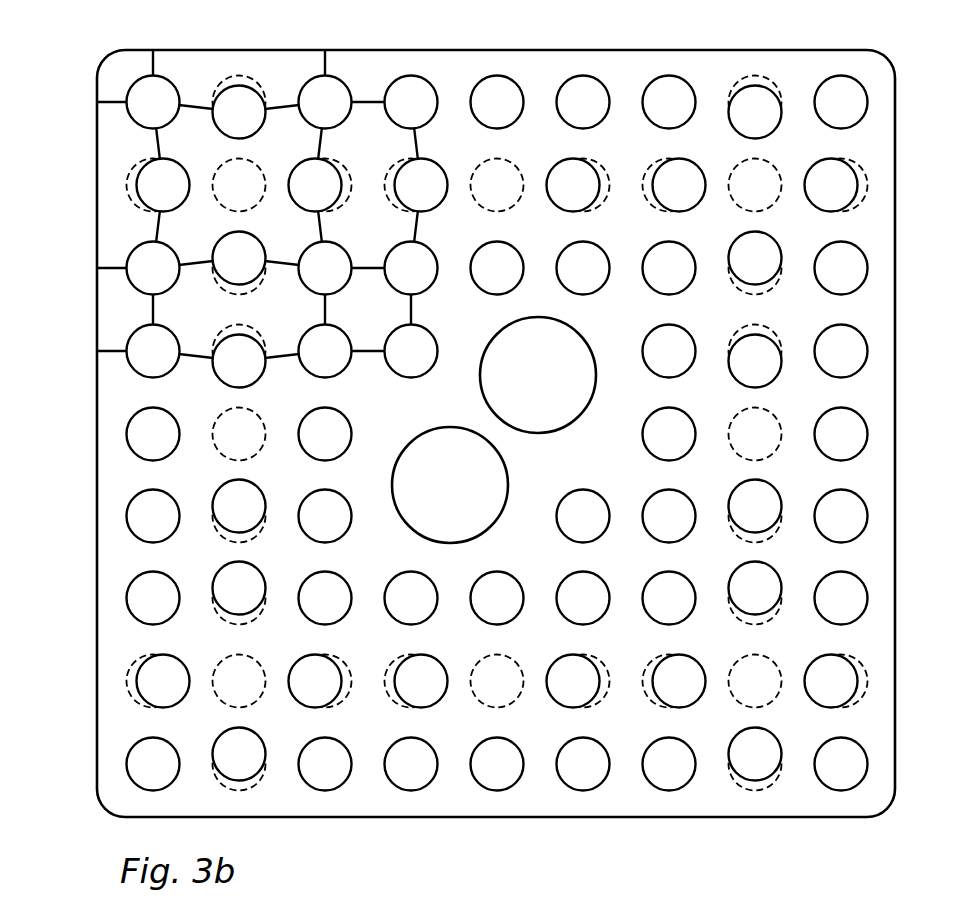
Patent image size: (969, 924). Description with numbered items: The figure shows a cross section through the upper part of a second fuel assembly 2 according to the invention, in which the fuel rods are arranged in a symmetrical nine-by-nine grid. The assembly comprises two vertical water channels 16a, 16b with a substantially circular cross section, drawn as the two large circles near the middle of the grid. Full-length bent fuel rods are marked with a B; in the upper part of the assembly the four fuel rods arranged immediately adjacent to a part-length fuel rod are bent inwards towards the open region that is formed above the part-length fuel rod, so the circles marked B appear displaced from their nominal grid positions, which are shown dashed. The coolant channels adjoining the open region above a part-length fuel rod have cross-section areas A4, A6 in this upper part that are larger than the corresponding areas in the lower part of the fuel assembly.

The substrate plate 2 is at (97, 327).
The vertical water channel 16a is at (462, 520).
The vertical water channel 16b is at (552, 340).
The cross-section area A4 is at (343, 200).
The cross-section area A6 is at (211, 205).
The bent fuel rod marking B is at (497, 433).